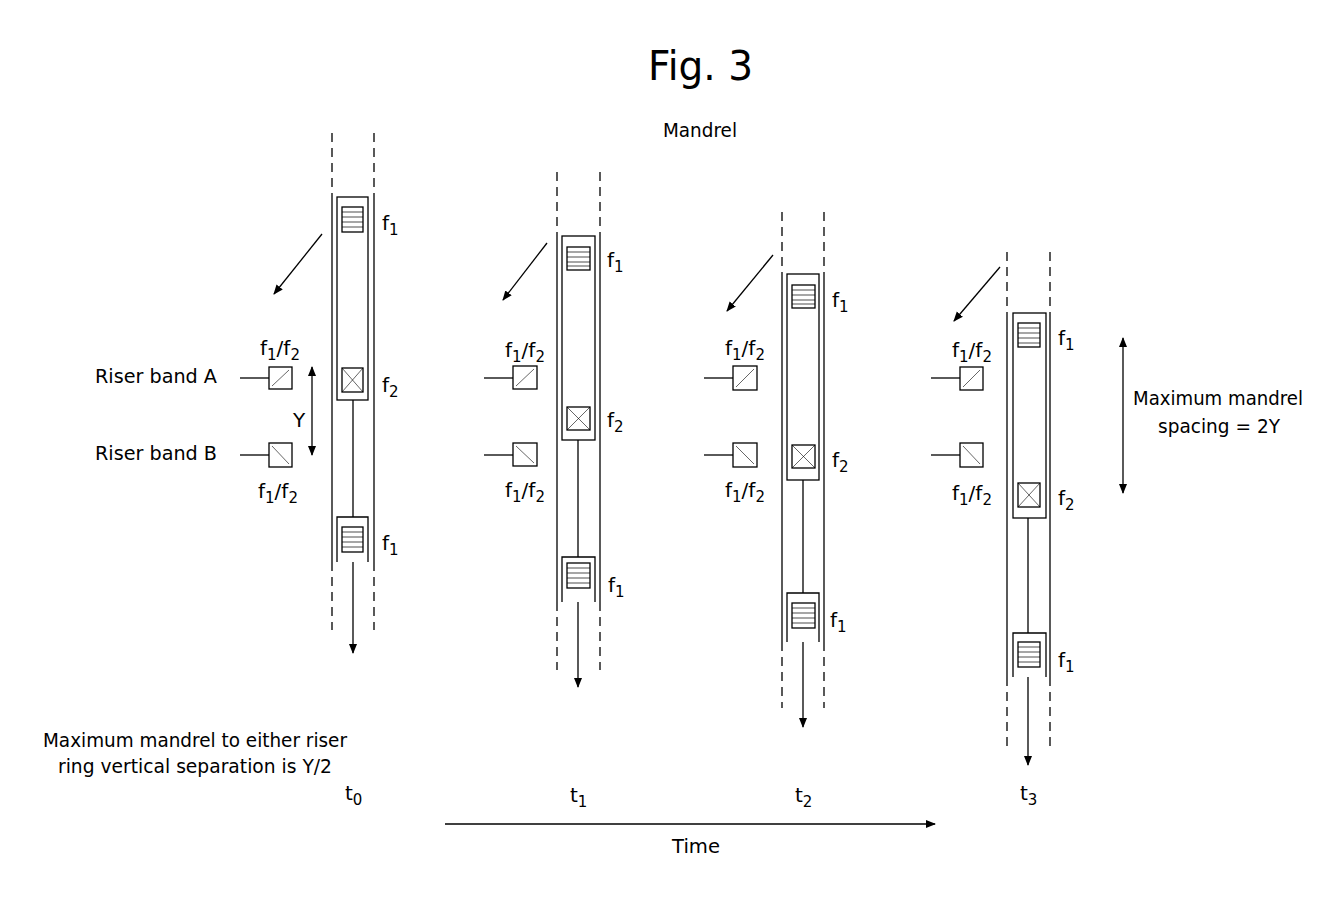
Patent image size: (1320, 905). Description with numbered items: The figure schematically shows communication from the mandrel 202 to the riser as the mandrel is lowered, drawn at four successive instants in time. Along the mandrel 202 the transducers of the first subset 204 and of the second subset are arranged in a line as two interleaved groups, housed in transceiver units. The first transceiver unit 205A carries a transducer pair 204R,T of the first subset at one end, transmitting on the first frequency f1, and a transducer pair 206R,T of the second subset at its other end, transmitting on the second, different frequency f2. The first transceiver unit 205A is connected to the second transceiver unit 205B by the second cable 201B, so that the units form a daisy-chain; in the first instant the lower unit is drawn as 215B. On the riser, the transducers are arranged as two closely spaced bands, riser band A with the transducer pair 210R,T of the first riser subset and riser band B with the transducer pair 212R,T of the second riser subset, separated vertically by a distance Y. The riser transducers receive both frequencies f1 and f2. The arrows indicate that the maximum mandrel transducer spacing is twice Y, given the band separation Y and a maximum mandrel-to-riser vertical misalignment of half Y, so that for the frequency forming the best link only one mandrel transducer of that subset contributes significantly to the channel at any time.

The mandrel 202 is at (332, 153).
The transducer pair of the first subset 204R,T is at (342, 210).
The first subset of mandrel transducers 204 is at (810, 605).
The transducer pair of the second subset 206R,T is at (357, 368).
The first transceiver unit 205A is at (356, 267).
The second transceiver unit 205B is at (595, 560).
The second cable 201B is at (353, 435).
The lower mandrel section at t0 215B is at (337, 552).
The riser transducer pair of the first subset 210R,T is at (269, 372).
The riser transducer pair of the second subset 212R,T is at (269, 465).